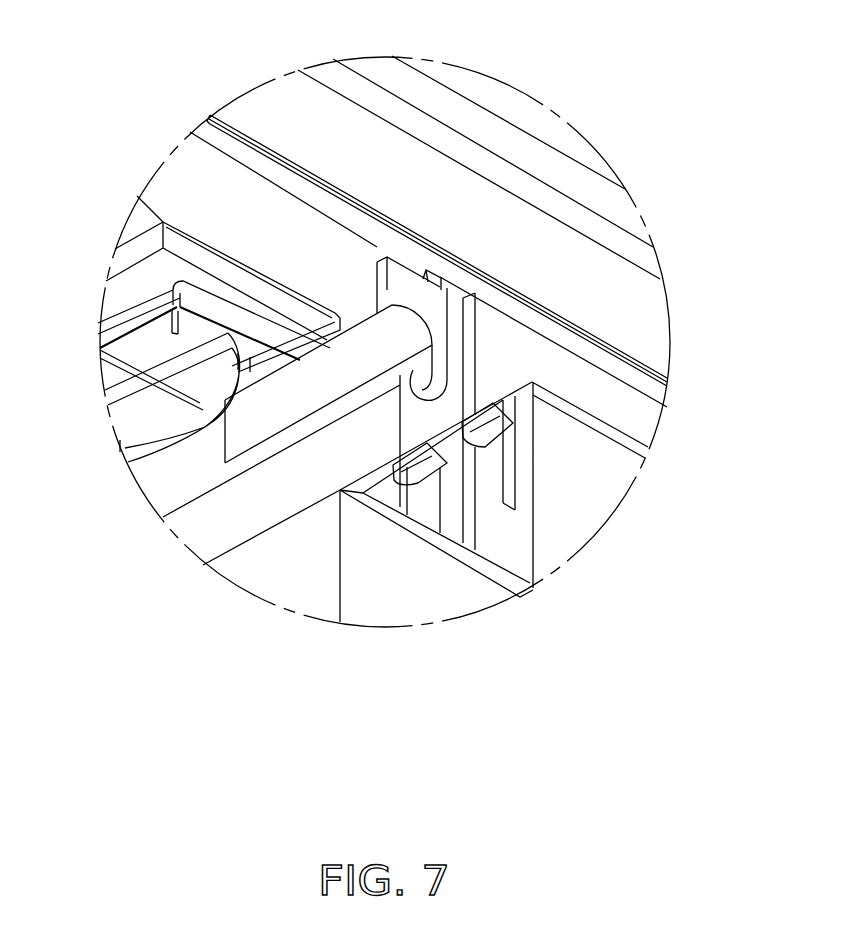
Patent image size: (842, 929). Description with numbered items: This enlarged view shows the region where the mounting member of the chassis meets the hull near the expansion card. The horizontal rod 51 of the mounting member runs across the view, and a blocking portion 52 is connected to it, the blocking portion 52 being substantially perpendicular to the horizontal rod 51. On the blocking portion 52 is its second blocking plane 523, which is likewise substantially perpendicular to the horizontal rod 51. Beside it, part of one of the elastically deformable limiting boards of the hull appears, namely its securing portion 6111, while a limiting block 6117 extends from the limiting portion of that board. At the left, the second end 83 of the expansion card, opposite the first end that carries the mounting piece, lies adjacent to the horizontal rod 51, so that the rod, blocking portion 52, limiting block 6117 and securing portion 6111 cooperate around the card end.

The horizontal rod 51 is at (267, 413).
The blocking portion 52 is at (387, 287).
The second end 83 is at (143, 343).
The second blocking plane 523 is at (437, 325).
The securing portion 6111 is at (453, 345).
The limiting block 6117 is at (453, 307).